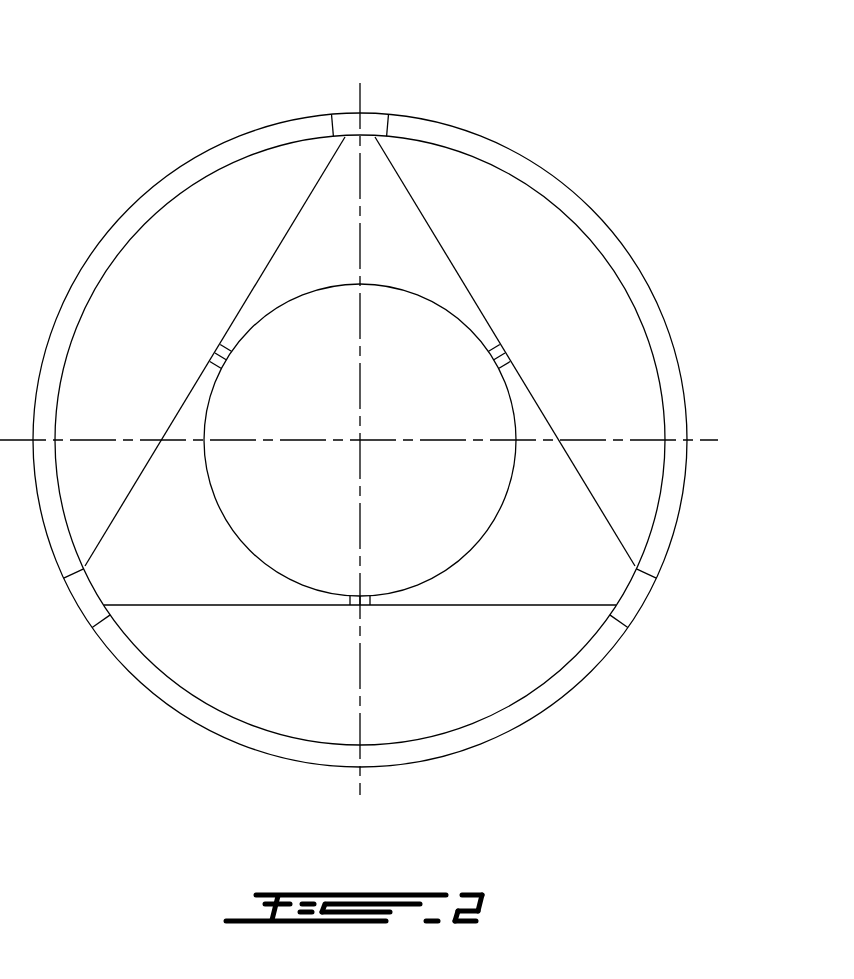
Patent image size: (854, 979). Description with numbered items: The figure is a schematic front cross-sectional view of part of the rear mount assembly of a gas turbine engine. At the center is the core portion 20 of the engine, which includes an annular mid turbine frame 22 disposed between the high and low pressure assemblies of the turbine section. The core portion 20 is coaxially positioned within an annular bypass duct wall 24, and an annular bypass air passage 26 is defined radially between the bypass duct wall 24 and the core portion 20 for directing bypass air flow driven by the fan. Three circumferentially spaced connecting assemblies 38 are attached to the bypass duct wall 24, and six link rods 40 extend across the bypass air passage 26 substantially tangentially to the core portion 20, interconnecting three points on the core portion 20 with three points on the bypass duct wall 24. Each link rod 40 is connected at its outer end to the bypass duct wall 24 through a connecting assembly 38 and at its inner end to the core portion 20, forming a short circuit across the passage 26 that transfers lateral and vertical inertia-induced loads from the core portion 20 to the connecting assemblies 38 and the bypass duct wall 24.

The core portion 20 is at (493, 495).
The annular mid turbine frame 22 is at (463, 542).
The annular bypass duct wall 24 is at (610, 247).
The annular bypass air passage 26 is at (580, 340).
The connecting assembly 38 is at (372, 112).
The link rod 40 is at (432, 227).